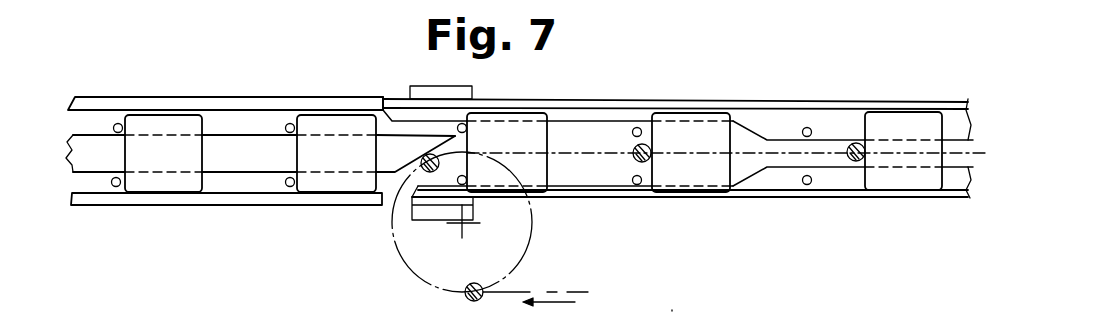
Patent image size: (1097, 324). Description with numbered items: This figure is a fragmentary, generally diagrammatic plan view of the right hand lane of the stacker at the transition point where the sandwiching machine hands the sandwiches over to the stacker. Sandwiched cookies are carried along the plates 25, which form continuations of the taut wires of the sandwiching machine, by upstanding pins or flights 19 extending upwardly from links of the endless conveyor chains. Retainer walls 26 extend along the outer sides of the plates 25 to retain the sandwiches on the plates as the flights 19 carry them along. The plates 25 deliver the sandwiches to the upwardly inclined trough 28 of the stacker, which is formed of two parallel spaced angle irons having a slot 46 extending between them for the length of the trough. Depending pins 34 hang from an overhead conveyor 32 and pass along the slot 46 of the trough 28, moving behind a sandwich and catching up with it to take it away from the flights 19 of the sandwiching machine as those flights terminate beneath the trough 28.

The upstanding pins or flights 19 is at (116, 124).
The plates 25 is at (252, 173).
The retainer walls 26 is at (217, 97).
The trough 28 is at (628, 201).
The overhead conveyor 32 is at (674, 316).
The depending pins 34 is at (634, 147).
The slot 46 is at (830, 168).